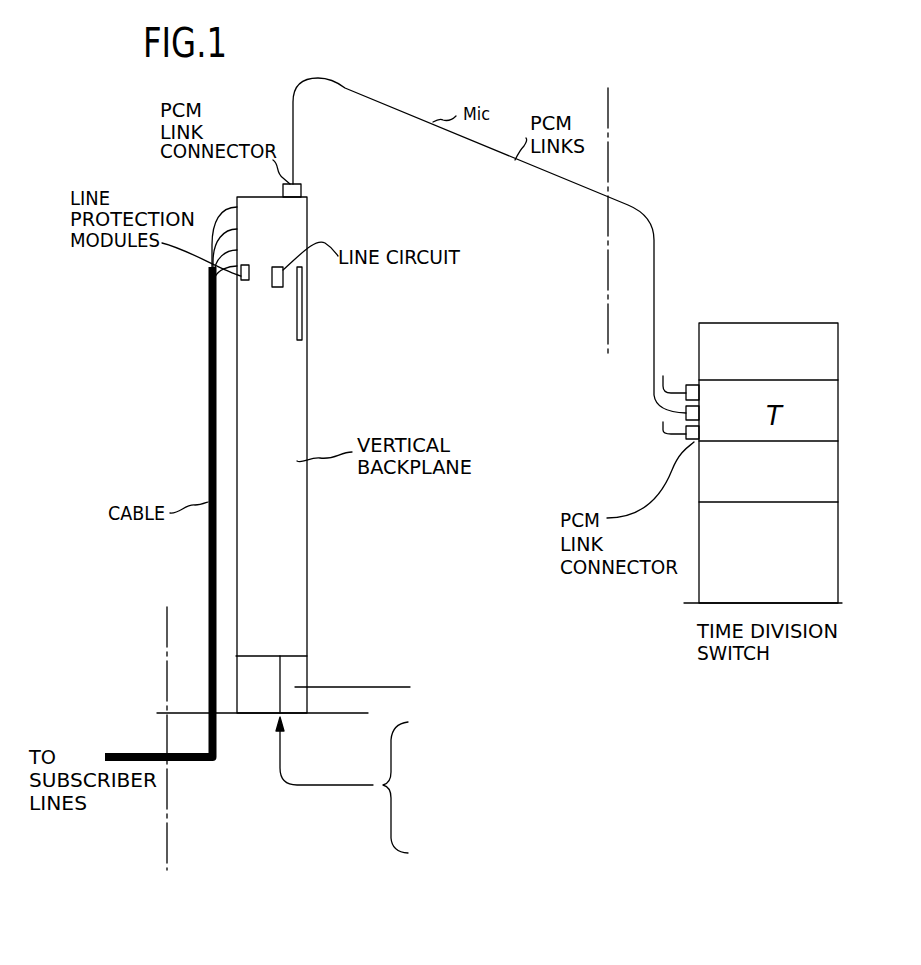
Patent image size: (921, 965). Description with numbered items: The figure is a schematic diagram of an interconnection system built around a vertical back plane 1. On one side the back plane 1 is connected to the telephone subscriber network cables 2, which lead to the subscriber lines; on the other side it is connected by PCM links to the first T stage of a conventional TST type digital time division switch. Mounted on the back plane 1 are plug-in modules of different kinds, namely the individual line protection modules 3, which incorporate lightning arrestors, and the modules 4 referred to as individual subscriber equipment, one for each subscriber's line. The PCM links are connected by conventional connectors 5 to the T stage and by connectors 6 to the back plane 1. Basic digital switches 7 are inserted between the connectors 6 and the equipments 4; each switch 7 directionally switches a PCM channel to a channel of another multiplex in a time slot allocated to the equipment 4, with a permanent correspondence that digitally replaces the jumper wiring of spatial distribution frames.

The vertical back plane 1 is at (297, 525).
The telephone subscriber network cable 2 is at (207, 556).
The individual line protection module 3 is at (250, 281).
The individual subscriber equipment module 4 is at (278, 266).
The connector 5 is at (686, 385).
The connector 6 is at (304, 190).
The basic digital switch 7 is at (305, 298).